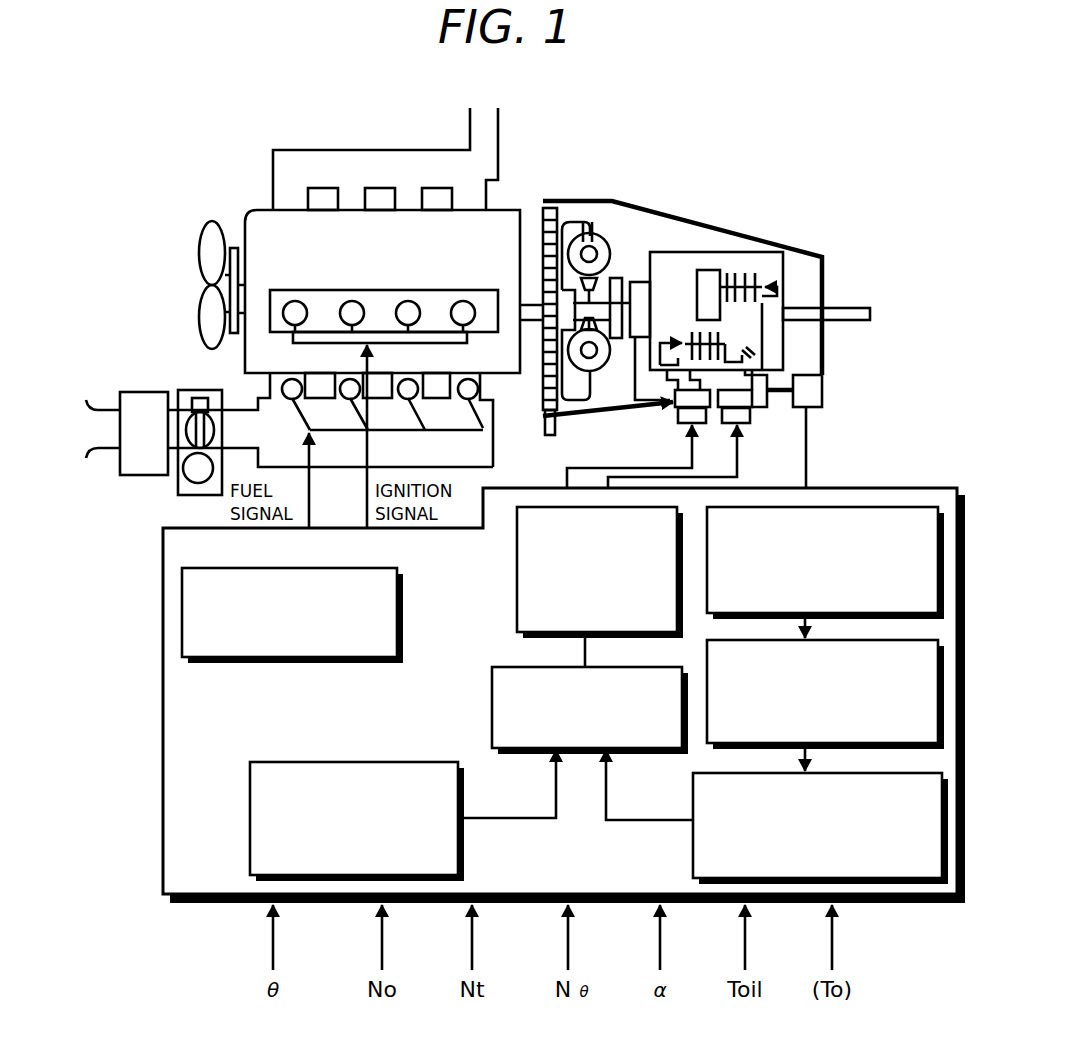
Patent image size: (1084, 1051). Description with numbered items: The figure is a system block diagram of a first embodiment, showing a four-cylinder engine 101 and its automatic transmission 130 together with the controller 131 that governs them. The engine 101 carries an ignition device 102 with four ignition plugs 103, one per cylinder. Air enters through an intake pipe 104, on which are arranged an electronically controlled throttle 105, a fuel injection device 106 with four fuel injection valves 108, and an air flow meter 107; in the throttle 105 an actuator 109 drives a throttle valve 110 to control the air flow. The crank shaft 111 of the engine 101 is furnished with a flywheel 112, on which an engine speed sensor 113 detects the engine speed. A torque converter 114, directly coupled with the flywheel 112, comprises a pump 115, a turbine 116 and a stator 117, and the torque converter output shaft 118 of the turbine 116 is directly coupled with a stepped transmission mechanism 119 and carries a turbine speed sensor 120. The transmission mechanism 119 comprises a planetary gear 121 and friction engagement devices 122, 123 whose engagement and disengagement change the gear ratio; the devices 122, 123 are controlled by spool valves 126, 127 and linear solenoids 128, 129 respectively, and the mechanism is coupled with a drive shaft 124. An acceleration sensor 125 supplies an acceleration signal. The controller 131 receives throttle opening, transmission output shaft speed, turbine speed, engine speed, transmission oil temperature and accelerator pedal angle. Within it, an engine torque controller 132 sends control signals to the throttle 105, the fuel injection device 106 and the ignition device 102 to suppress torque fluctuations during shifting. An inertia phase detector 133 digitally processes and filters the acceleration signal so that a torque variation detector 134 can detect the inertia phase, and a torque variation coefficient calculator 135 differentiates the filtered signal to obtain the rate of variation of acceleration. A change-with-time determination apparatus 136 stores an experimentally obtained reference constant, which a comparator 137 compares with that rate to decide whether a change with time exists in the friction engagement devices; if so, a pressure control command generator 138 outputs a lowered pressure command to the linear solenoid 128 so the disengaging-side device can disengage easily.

The engine 101 is at (257, 221).
The ignition device 102 is at (433, 340).
The ignition plugs 103 is at (287, 305).
The intake pipe 104 is at (327, 457).
The electronically controlled throttle 105 is at (188, 388).
The fuel injection device 106 is at (494, 468).
The air flow meter 107 is at (138, 398).
The fuel injection valves 108 is at (478, 389).
The actuator 109 is at (182, 474).
The throttle valve 110 is at (207, 412).
The crank shaft 111 is at (523, 300).
The flywheel 112 is at (553, 208).
The engine speed sensor 113 is at (546, 427).
The torque converter 114 is at (590, 258).
The pump 115 is at (593, 372).
The turbine 116 is at (578, 378).
The stator 117 is at (600, 356).
The torque converter output shaft 118 is at (617, 275).
The stepped transmission mechanism 119 is at (722, 252).
The turbine speed sensor 120 is at (706, 270).
The planetary gear 121 is at (735, 273).
The friction engagement device 122 is at (760, 272).
The friction engagement device 123 is at (720, 338).
The drive shaft 124 is at (848, 320).
The acceleration sensor 125 is at (822, 392).
The spool valve 126 is at (678, 413).
The spool valve 127 is at (745, 400).
The linear solenoid 128 is at (700, 424).
The linear solenoid 129 is at (745, 426).
The automatic transmission 130 is at (590, 198).
The controller 131 is at (163, 730).
The engine torque controller 132 is at (182, 606).
The inertia phase detector 133 is at (847, 505).
The torque variation detector 134 is at (704, 748).
The torque variation coefficient calculator 135 is at (693, 832).
The change-with-time determination apparatus 136 is at (362, 762).
The comparator 137 is at (492, 700).
The pressure control command generator 138 is at (517, 600).